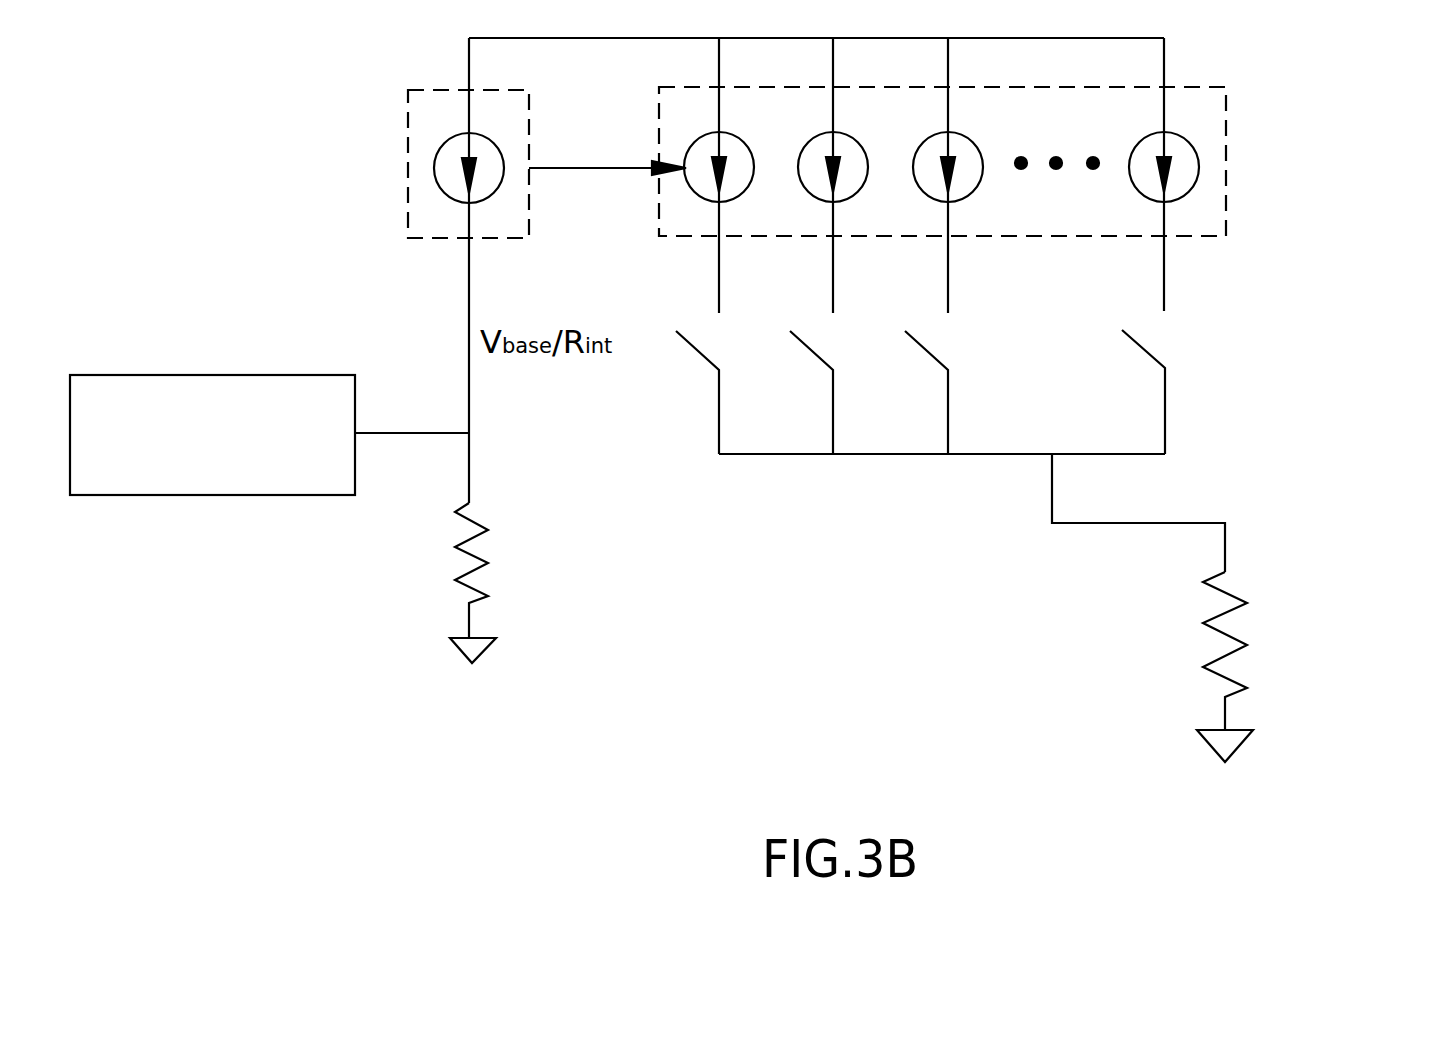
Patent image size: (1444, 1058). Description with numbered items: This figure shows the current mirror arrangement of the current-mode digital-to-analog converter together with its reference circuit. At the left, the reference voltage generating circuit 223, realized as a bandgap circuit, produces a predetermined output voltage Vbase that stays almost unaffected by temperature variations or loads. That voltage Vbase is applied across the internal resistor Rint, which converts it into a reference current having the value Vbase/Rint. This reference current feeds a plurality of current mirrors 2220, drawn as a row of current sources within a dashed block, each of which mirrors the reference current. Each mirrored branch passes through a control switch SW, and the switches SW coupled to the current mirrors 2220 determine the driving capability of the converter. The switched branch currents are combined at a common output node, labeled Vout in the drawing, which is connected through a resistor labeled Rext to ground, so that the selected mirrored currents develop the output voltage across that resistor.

The current mirror 2220 is at (1226, 158).
The reference voltage generating circuit 223 is at (250, 495).
The control switch SW is at (946, 388).
The output voltage node Vout is at (1140, 513).
The external resistor Rext is at (1191, 667).
The output voltage Vbase is at (412, 411).
The internal resistor Rint is at (501, 583).